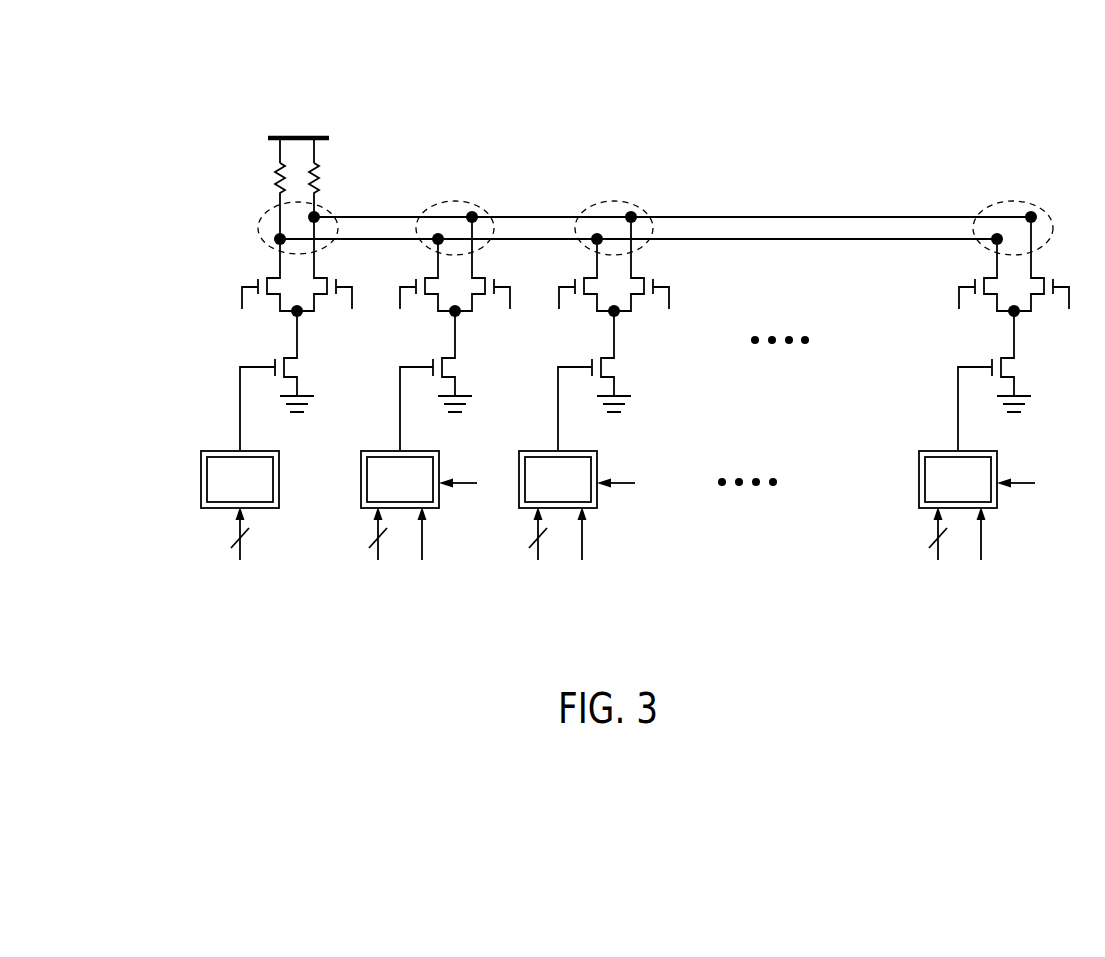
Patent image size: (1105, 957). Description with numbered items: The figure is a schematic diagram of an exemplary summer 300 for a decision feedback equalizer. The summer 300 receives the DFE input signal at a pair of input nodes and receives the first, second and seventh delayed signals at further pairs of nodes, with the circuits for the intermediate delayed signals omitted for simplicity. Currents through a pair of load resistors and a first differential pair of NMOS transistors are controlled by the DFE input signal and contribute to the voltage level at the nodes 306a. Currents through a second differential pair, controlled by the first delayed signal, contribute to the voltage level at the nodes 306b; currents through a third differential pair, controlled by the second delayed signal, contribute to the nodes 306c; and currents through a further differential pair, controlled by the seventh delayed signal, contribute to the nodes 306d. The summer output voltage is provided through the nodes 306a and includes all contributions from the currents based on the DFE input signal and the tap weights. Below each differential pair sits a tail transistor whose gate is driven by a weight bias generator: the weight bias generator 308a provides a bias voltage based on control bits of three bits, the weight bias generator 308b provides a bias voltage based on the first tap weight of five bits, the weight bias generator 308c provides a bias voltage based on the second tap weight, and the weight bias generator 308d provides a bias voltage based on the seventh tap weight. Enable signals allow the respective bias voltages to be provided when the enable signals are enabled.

The summer 300 is at (176, 94).
The nodes 306a is at (258, 217).
The nodes 306b is at (440, 202).
The nodes 306c is at (598, 202).
The nodes 306d is at (995, 202).
The weight bias generator 308a is at (221, 491).
The weight bias generator 308b is at (381, 491).
The weight bias generator 308c is at (539, 491).
The weight bias generator 308d is at (939, 491).